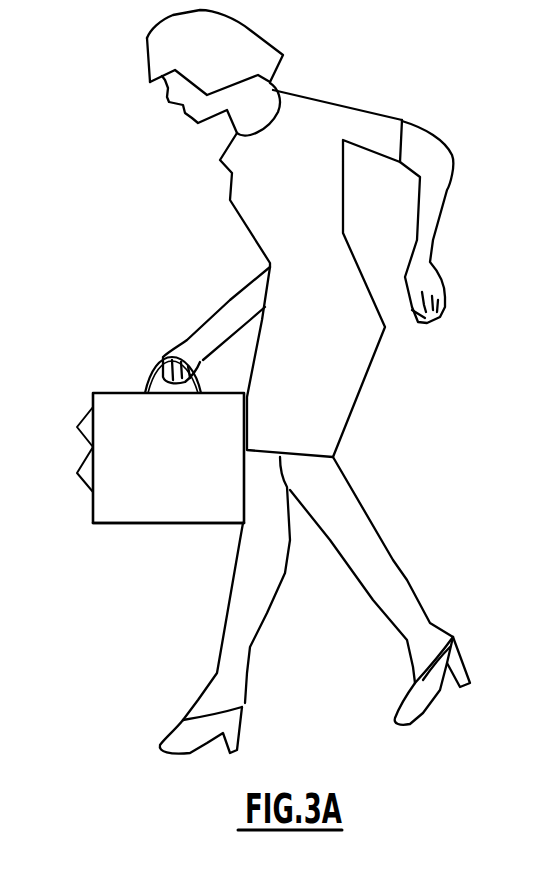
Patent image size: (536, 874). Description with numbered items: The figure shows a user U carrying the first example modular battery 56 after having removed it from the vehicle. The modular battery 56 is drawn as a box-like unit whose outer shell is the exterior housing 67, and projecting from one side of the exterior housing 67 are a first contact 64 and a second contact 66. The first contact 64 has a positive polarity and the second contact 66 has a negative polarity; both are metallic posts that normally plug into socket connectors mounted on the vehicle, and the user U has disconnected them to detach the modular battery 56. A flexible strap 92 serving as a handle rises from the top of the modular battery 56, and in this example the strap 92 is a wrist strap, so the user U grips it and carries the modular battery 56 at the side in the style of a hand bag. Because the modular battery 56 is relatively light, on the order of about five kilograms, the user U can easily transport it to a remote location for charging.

The user U is at (312, 85).
The modular battery 56 is at (137, 528).
The flexible strap 92 is at (150, 377).
The first contact 64 is at (75, 413).
The second contact 66 is at (75, 460).
The exterior housing 67 is at (208, 527).